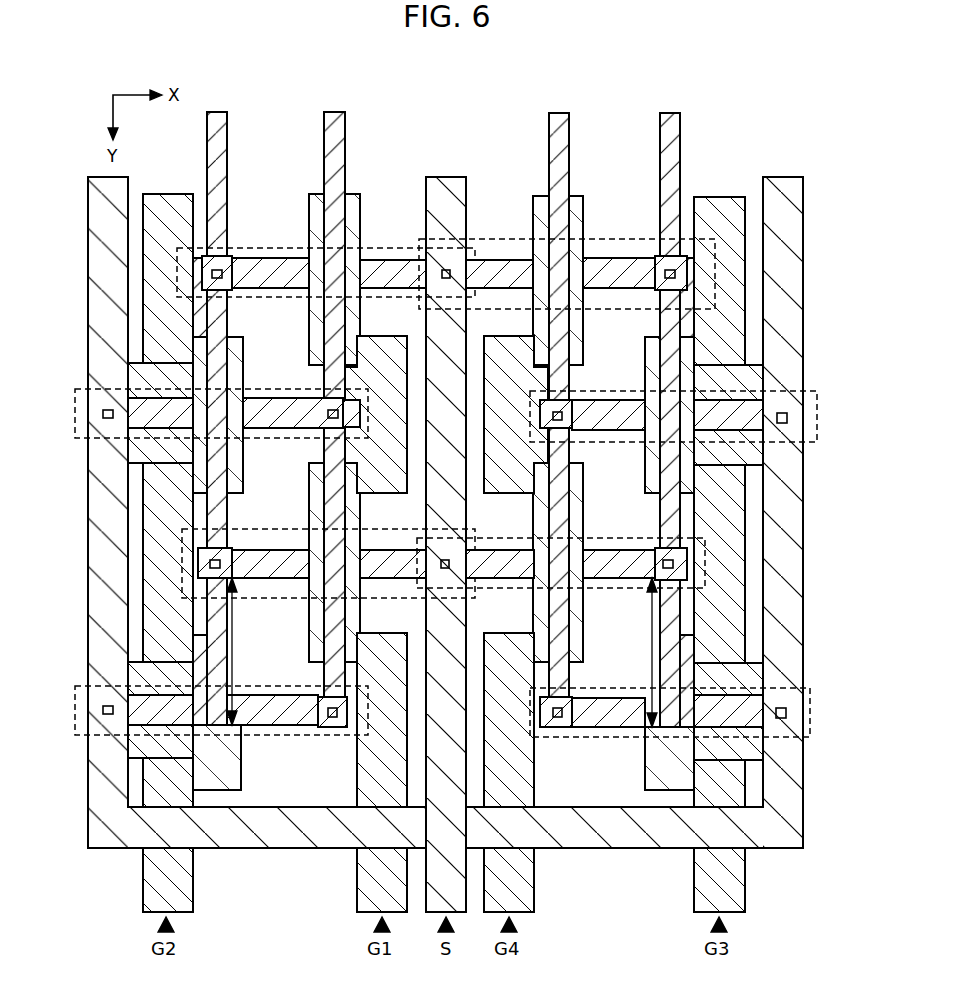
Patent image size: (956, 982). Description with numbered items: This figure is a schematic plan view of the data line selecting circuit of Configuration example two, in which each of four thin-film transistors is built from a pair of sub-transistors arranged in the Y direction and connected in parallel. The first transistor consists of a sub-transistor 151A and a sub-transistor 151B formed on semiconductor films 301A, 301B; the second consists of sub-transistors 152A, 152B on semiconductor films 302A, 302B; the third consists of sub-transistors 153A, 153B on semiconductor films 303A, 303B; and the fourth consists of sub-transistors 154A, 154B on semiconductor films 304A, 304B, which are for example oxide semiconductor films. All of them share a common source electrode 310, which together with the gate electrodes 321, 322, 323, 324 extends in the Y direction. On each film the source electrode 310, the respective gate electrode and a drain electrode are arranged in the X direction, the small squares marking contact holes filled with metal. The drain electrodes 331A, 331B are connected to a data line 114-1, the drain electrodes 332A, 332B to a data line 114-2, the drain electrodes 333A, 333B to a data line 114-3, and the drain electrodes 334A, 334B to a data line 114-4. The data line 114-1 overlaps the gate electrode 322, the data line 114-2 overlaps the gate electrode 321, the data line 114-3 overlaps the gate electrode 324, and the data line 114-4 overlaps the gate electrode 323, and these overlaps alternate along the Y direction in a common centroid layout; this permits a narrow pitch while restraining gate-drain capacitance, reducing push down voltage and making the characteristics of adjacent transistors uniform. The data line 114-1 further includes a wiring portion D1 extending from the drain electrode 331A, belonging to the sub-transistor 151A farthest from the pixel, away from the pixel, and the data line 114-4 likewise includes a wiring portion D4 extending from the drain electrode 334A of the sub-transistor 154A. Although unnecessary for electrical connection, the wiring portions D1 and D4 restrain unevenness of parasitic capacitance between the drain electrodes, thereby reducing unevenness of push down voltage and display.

The data line 114-1 is at (228, 132).
The data line 114-2 is at (337, 132).
The data line 114-3 is at (567, 137).
The data line 114-4 is at (680, 135).
The sub-transistor 151A is at (290, 530).
The sub-transistor 151B is at (287, 247).
The sub-transistor 152A is at (250, 692).
The sub-transistor 152B is at (243, 378).
The sub-transistor 153A is at (598, 745).
The sub-transistor 153B is at (605, 395).
The sub-transistor 154A is at (598, 535).
The sub-transistor 154B is at (598, 247).
The semiconductor film 301A is at (375, 550).
The semiconductor film 301B is at (378, 262).
The semiconductor film 302A is at (170, 682).
The semiconductor film 302B is at (170, 388).
The semiconductor film 303A is at (720, 682).
The semiconductor film 303B is at (720, 388).
The semiconductor film 304A is at (488, 550).
The semiconductor film 304B is at (505, 235).
The source electrode 310 is at (115, 838).
The gate electrode 321 is at (357, 900).
The gate electrode 322 is at (190, 900).
The gate electrode 323 is at (694, 900).
The gate electrode 324 is at (534, 900).
The drain electrode 331A is at (230, 548).
The drain electrode 331B is at (228, 262).
The drain electrode 332A is at (318, 727).
The drain electrode 332B is at (320, 398).
The drain electrode 333A is at (590, 695).
The drain electrode 333B is at (562, 427).
The drain electrode 334A is at (660, 548).
The drain electrode 334B is at (658, 262).
The wiring portion D1 is at (246, 651).
The wiring portion D4 is at (639, 652).